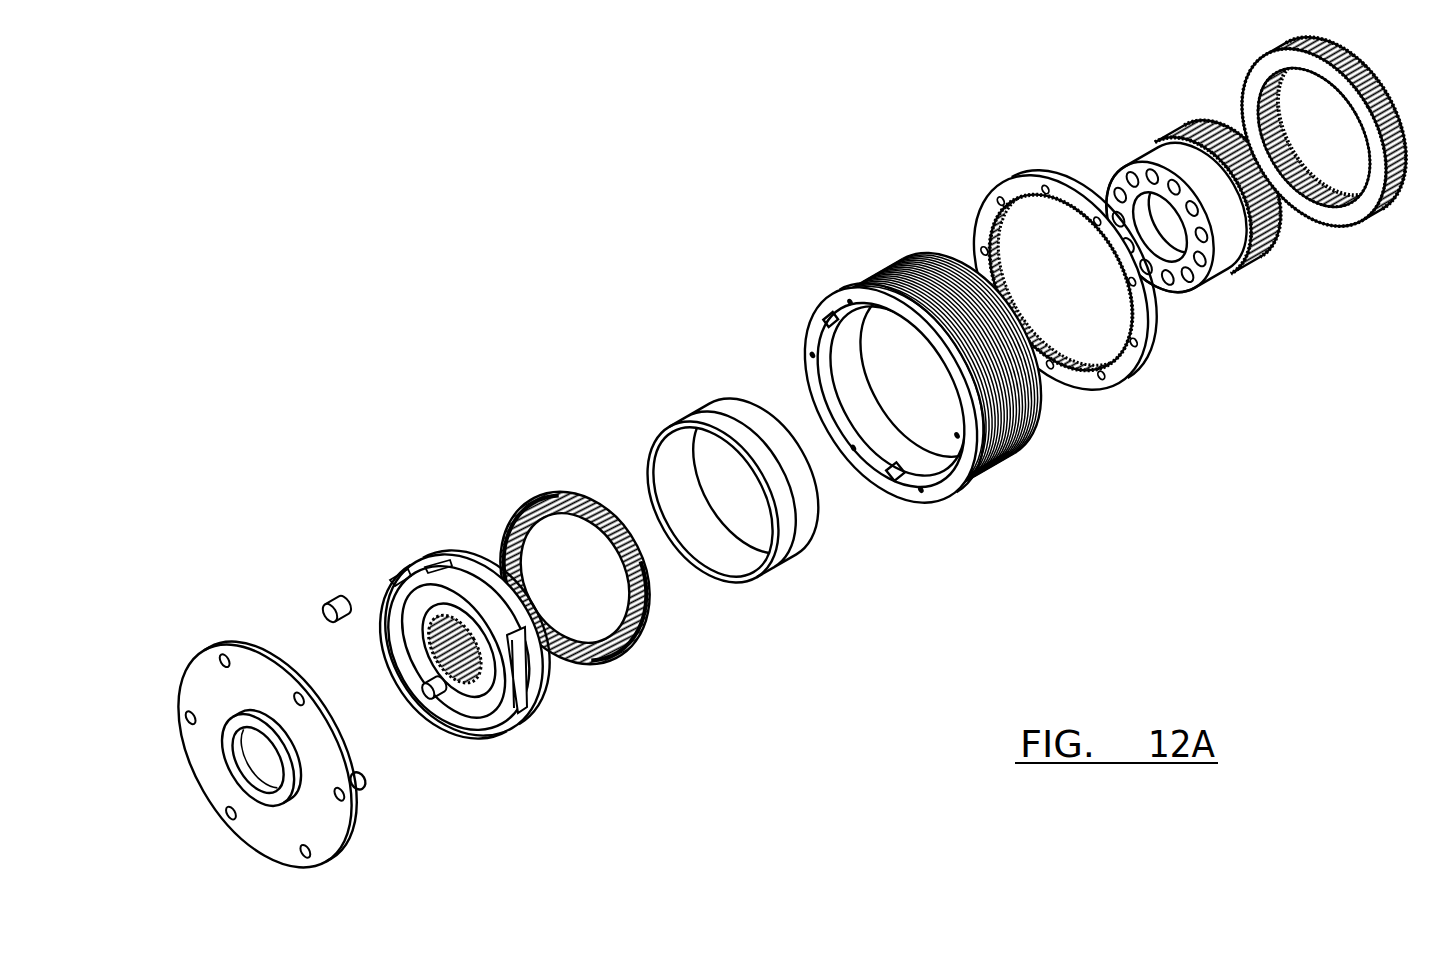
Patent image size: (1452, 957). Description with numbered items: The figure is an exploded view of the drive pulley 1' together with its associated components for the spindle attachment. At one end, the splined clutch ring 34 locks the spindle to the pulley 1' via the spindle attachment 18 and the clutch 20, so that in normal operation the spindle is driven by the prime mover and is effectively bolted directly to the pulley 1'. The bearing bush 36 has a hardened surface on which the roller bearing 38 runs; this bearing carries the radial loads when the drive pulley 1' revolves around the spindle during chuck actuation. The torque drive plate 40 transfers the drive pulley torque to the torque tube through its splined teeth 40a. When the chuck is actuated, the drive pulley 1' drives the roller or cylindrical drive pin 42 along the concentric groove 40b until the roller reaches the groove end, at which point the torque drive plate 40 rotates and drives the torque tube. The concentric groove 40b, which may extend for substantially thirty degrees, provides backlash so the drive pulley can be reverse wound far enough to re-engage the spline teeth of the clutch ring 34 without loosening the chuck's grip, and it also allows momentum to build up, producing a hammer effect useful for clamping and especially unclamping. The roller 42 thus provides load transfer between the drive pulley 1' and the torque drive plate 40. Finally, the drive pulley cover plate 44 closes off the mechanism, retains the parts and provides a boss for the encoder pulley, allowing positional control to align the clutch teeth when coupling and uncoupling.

The drive pulley cover plate 44 is at (193, 678).
The roller/cylindrical drive pin 42 is at (333, 601).
The torque drive plate 40 is at (468, 566).
The splined teeth 40a is at (463, 715).
The concentric groove 40b is at (545, 706).
The roller bearing 38 is at (556, 493).
The bearing bush 36 is at (701, 418).
The drive pulley 1' is at (923, 413).
The splined clutch ring 34 is at (1105, 388).
The spindle attachment 18 is at (1222, 256).
The clutch 20 is at (1385, 207).